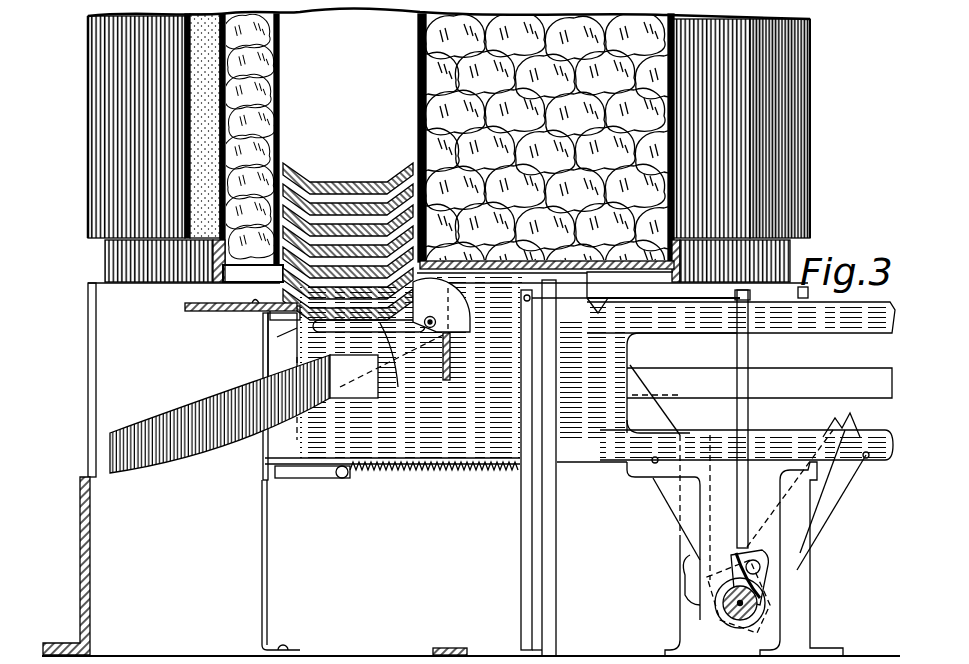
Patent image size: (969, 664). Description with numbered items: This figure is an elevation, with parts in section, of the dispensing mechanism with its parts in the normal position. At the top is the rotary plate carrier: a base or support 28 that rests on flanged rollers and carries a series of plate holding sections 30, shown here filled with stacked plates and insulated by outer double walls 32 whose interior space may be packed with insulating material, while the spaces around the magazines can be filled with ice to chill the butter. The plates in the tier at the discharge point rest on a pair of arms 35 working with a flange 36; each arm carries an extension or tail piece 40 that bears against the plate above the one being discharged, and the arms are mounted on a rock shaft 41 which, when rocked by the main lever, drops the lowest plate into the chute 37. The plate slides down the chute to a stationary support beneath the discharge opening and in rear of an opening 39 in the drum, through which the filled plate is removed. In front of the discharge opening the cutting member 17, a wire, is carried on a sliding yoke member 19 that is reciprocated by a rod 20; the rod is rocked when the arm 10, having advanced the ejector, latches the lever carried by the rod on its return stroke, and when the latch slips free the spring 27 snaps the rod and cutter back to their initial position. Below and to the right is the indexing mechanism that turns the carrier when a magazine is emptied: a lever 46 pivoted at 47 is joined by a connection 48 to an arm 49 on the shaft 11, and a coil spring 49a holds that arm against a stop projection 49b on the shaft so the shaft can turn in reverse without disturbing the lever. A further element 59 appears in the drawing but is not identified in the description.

The arm 10 is at (746, 511).
The shaft 11 is at (733, 620).
The cutting member 17 is at (257, 343).
The sliding yoke member 19 is at (268, 358).
The rod 20 is at (315, 472).
The spring 27 is at (427, 480).
The base or support 28 is at (602, 262).
The plate holding sections 30 is at (487, 132).
The outer double walls 32 is at (186, 160).
The arms 35 is at (397, 365).
The flange 36 is at (256, 305).
The chute 37 is at (218, 433).
The opening 39 is at (88, 428).
The extension or tail piece 40 is at (432, 290).
The rock shaft 41 is at (482, 333).
The lever 46 is at (562, 514).
The pivot 47 is at (457, 650).
The connection 48 is at (693, 300).
The arm 49 is at (749, 360).
The coil spring 49a is at (733, 558).
The stop projection 49b is at (761, 567).
The bracket 59 is at (749, 392).